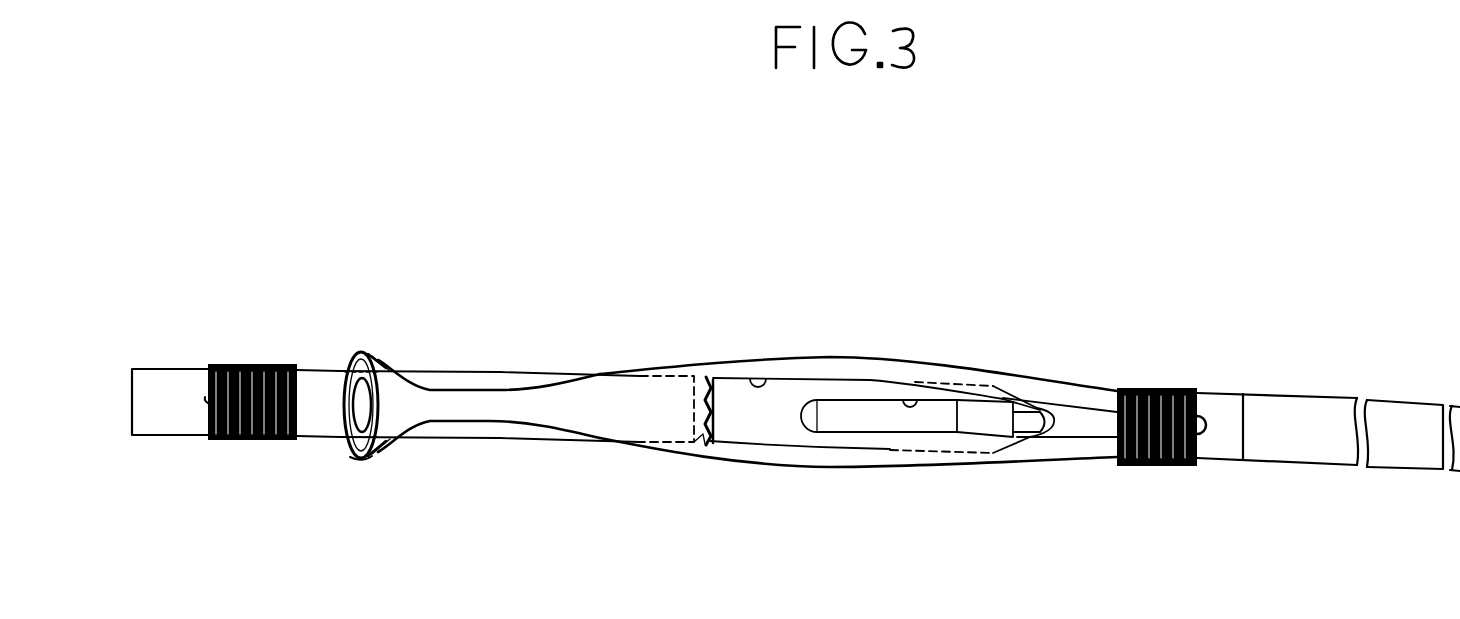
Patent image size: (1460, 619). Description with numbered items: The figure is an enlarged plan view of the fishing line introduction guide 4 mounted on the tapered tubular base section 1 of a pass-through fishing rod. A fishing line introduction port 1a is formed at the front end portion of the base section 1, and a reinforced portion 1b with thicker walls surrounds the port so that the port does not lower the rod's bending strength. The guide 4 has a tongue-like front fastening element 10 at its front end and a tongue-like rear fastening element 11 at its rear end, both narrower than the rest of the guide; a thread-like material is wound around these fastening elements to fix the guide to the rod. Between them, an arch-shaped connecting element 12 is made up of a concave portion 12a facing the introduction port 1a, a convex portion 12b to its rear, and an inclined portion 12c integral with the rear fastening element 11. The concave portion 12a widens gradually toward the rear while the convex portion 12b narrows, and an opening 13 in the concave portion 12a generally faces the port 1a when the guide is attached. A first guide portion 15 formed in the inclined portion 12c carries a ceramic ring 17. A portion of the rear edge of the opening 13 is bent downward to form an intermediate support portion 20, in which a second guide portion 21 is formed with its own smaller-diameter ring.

The base section 1 is at (1232, 392).
The fishing line introduction port 1a is at (913, 398).
The reinforced portion 1b is at (197, 420).
The fishing line introduction guide 4 is at (843, 343).
The front fastening element 10 is at (1108, 400).
The rear fastening element 11 is at (306, 400).
The connecting element 12 is at (670, 392).
The concave portion 12a is at (960, 372).
The convex portion 12b is at (533, 410).
The inclined portion 12c is at (353, 460).
The opening 13 is at (766, 376).
The first guide portion 15 is at (386, 352).
The ring 17 is at (343, 357).
The intermediate support portion 20 is at (683, 448).
The second guide portion 21 is at (718, 396).